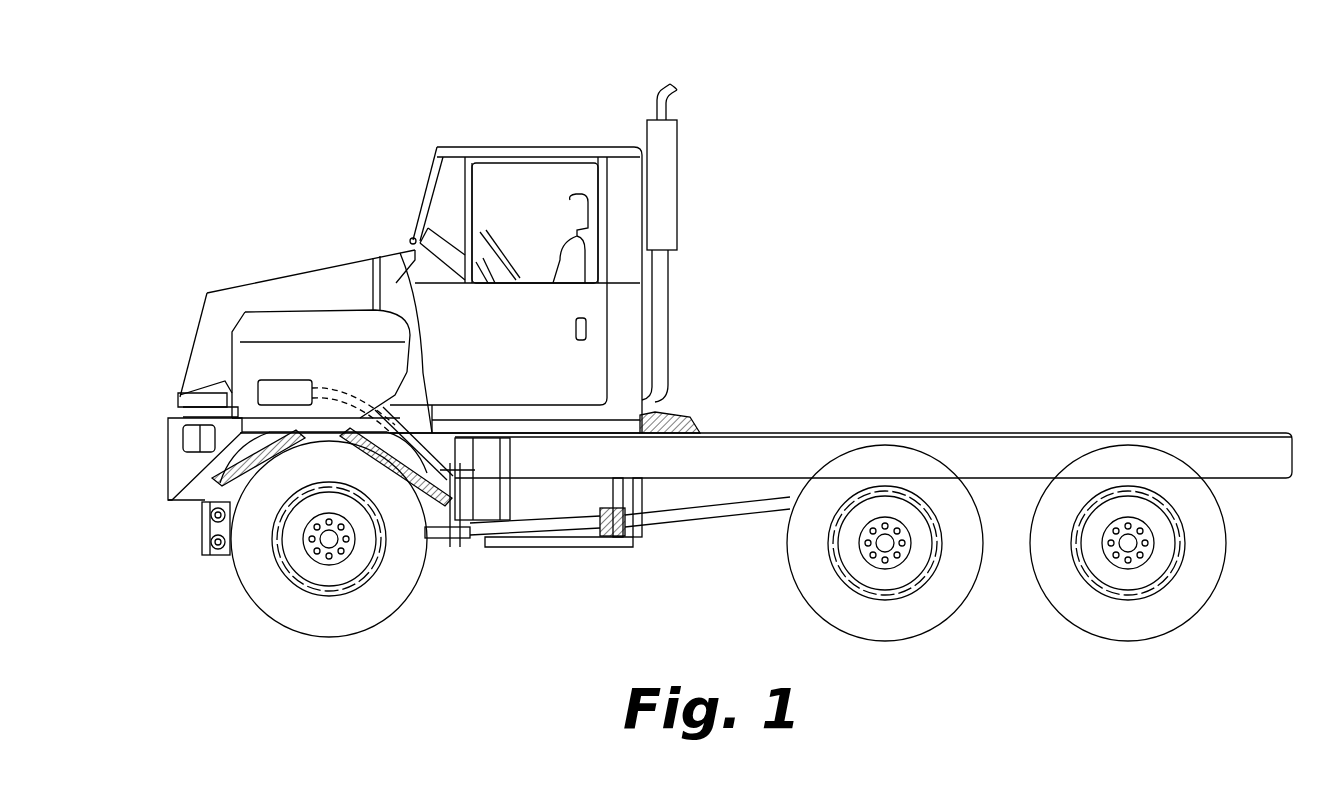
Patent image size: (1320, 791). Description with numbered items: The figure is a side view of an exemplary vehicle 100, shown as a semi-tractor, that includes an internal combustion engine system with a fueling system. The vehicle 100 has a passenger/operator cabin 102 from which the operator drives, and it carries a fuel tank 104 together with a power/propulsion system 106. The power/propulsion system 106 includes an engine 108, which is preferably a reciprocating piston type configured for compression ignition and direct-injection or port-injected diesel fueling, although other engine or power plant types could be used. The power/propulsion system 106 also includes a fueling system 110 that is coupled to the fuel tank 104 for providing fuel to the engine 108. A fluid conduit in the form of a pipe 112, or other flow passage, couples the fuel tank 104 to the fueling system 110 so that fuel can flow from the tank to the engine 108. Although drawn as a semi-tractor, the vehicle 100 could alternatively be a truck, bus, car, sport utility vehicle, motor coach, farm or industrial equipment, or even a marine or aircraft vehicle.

The vehicle 100 is at (852, 160).
The passenger/operator cabin 102 is at (505, 140).
The fuel tank 104 is at (538, 548).
The power/propulsion system 106 is at (313, 320).
The engine 108 is at (343, 342).
The fueling system 110 is at (270, 380).
The pipe 112 is at (456, 548).